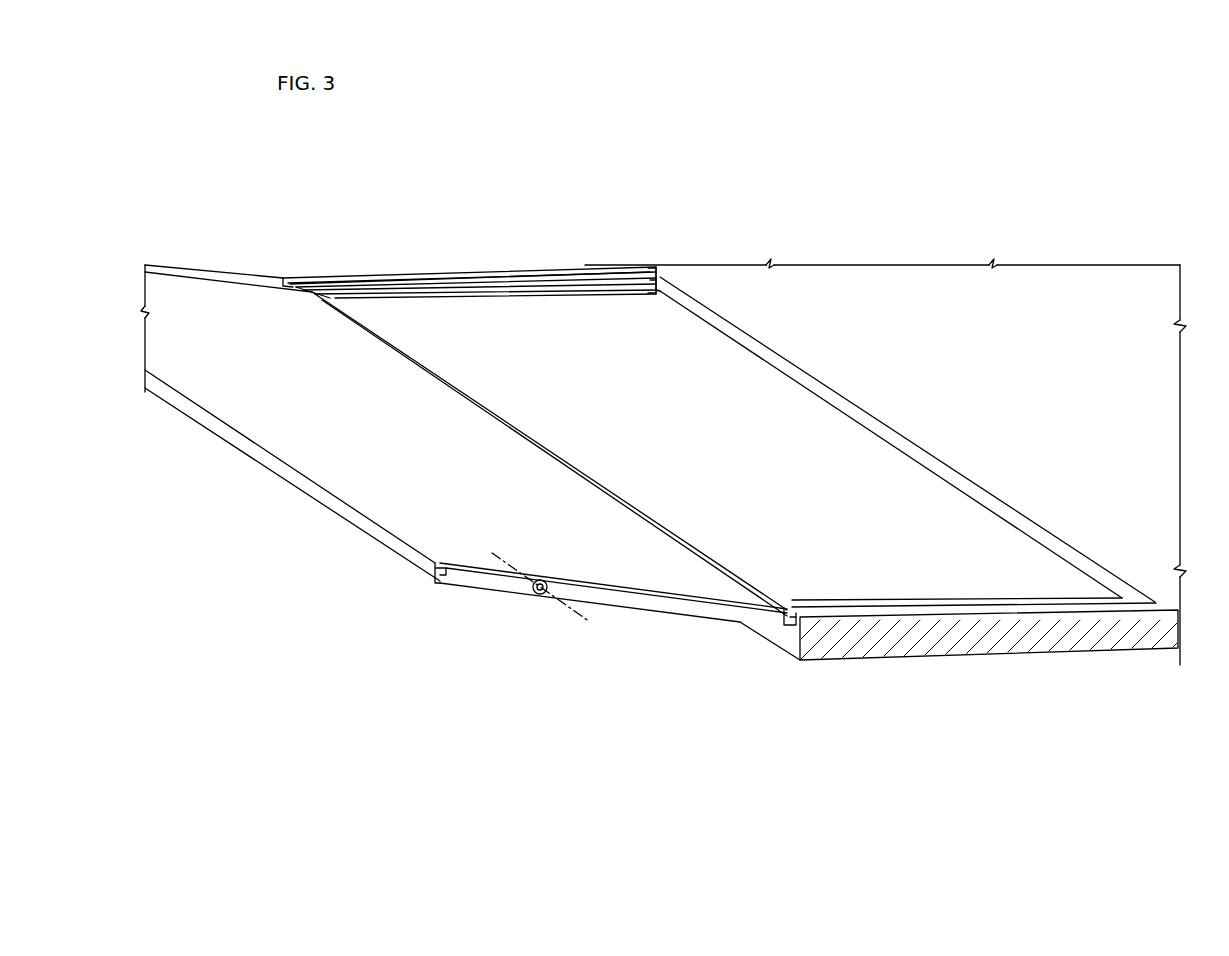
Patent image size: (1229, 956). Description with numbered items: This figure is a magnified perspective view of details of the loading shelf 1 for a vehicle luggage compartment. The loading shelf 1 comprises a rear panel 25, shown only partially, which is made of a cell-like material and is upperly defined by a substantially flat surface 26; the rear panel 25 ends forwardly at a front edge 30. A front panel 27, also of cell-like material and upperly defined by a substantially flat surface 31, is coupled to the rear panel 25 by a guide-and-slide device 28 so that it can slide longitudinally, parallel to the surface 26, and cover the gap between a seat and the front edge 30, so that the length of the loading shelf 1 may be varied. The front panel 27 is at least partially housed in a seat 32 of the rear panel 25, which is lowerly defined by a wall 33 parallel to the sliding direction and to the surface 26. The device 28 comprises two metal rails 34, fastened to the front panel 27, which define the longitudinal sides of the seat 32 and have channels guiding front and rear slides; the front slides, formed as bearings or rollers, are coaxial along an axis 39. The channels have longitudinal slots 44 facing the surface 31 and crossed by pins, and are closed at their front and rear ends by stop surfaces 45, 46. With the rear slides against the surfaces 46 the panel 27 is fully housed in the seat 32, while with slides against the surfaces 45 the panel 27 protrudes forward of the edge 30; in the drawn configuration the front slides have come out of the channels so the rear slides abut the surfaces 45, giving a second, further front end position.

The loading shelf 1 is at (1021, 233).
The rear panel 25 is at (935, 290).
The substantially flat surface 26 is at (1057, 332).
The front panel 27 is at (252, 320).
The guide-and-slide device 28 is at (637, 253).
The front edge 30 is at (755, 624).
The substantially flat surface 31 is at (195, 318).
The seat 32 is at (733, 399).
The wall 33 is at (830, 416).
The rails 34 is at (514, 273).
The axis 39 is at (506, 556).
The longitudinal slots 44 is at (443, 292).
The front stop surface 45 is at (770, 626).
The rear stop surface 46 is at (668, 277).